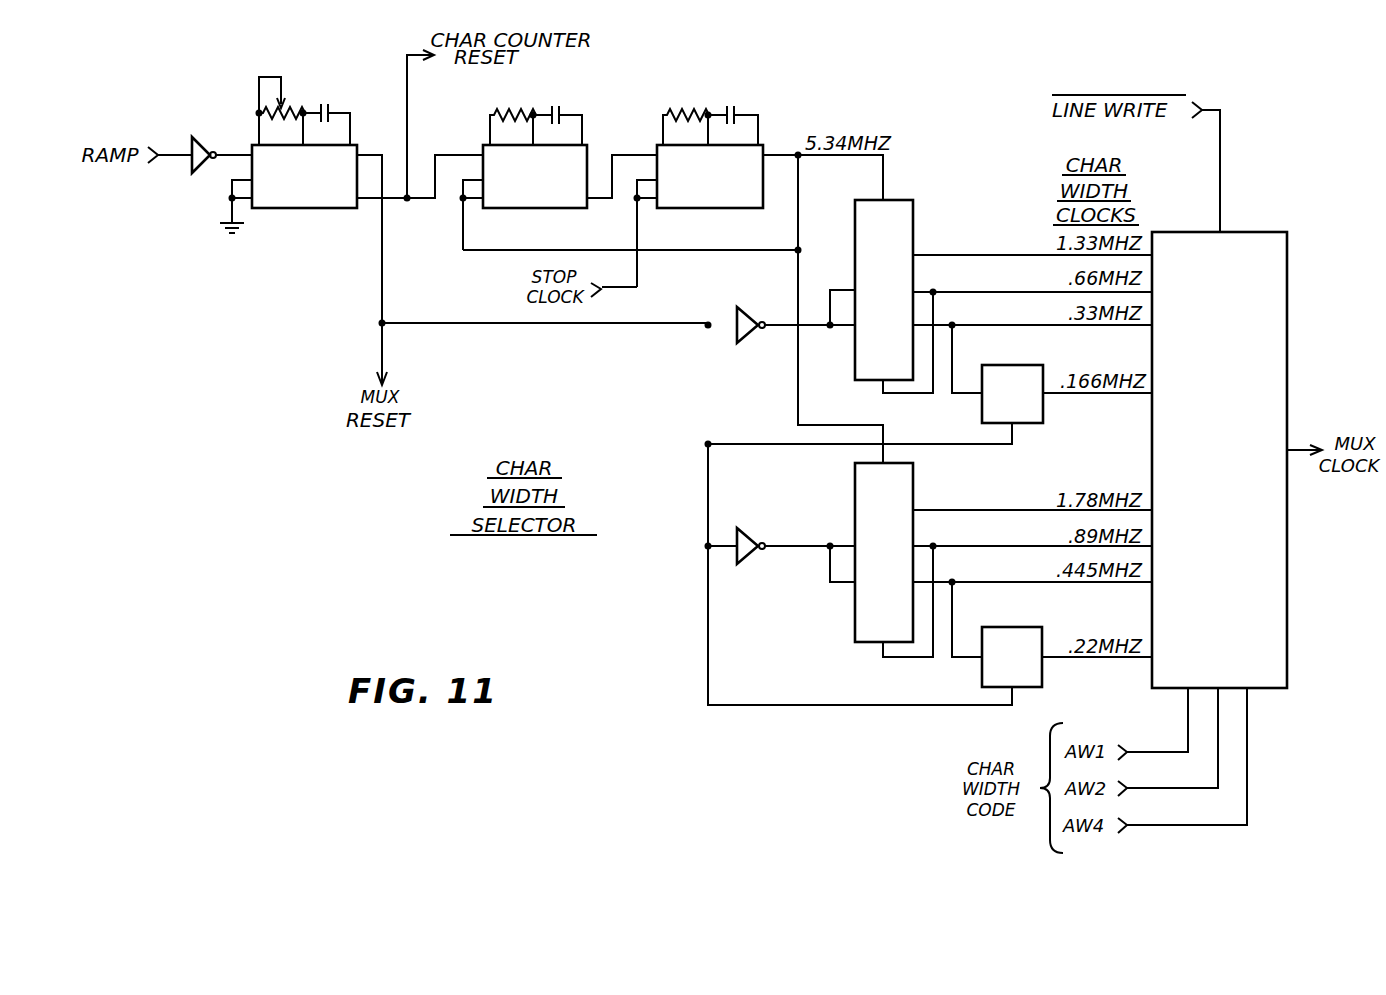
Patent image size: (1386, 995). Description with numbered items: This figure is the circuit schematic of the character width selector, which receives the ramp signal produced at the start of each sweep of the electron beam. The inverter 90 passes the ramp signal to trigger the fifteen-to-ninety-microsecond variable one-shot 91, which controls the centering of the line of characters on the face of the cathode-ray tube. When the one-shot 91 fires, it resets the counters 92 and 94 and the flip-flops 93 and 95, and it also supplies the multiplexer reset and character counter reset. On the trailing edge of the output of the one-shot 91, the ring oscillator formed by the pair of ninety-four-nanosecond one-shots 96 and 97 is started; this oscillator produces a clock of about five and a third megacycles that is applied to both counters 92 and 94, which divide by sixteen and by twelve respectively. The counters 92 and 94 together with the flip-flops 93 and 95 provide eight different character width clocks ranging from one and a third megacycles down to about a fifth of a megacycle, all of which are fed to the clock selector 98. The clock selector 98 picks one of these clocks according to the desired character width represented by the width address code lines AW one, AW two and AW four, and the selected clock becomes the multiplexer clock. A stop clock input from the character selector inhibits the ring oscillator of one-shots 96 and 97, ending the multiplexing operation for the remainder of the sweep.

The inverter 90 is at (201, 140).
The 15-90-microsecond variable one-shot 91 is at (296, 208).
The counter 92 is at (913, 225).
The flip-flop 93 is at (1043, 412).
The counter 94 is at (855, 492).
The flip-flop 95 is at (1015, 628).
The 0.094-microsecond one-shot 96 is at (565, 208).
The 0.094-microsecond one-shot 97 is at (738, 208).
The clock selector 98 is at (1245, 230).